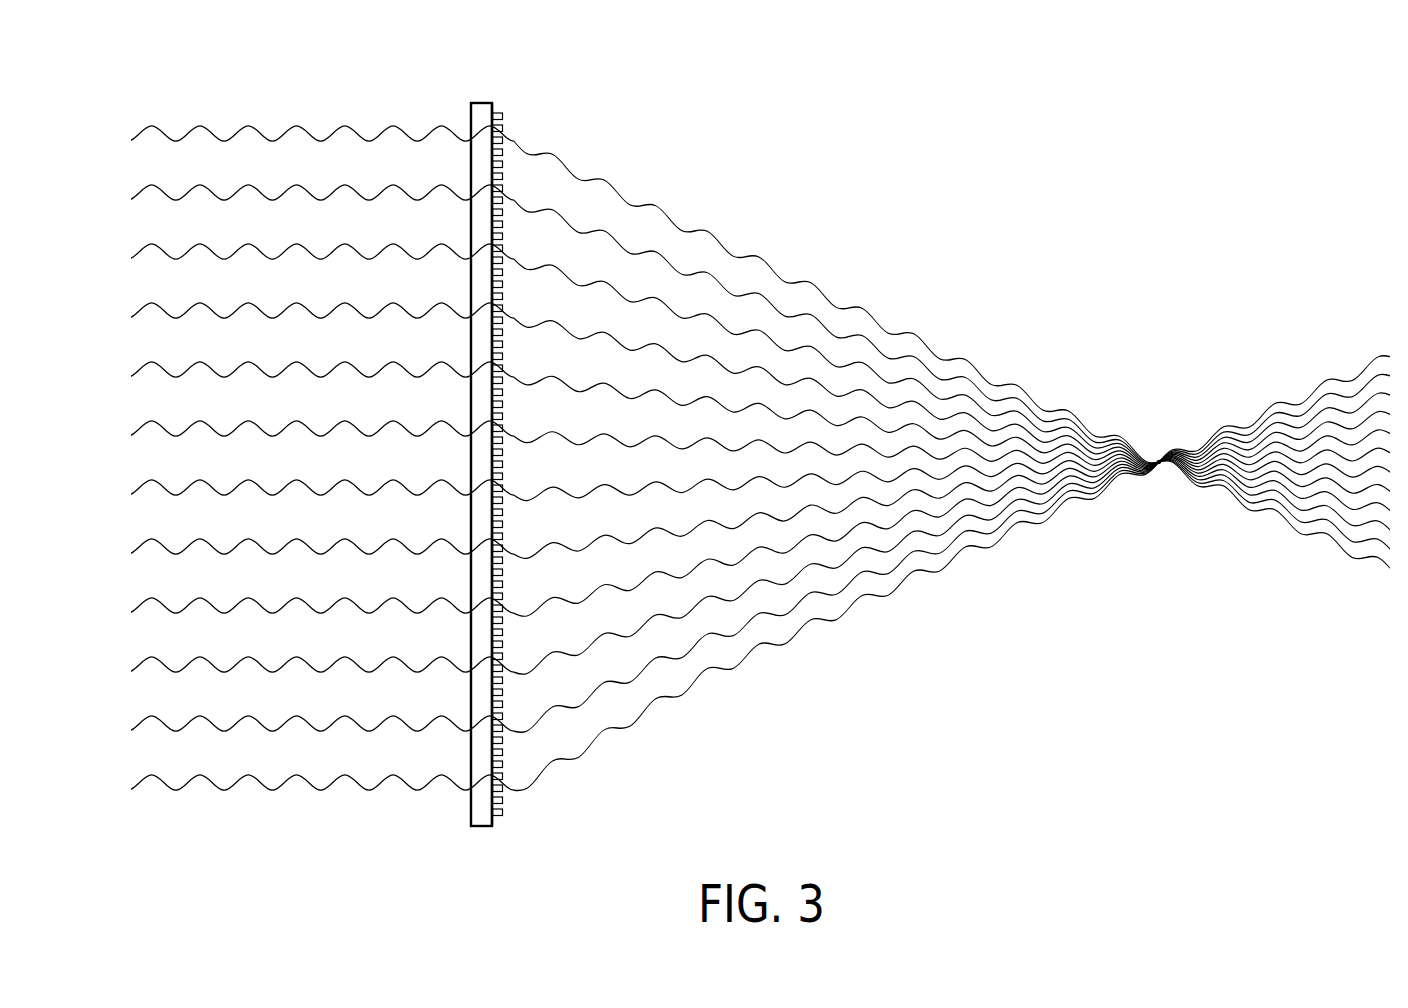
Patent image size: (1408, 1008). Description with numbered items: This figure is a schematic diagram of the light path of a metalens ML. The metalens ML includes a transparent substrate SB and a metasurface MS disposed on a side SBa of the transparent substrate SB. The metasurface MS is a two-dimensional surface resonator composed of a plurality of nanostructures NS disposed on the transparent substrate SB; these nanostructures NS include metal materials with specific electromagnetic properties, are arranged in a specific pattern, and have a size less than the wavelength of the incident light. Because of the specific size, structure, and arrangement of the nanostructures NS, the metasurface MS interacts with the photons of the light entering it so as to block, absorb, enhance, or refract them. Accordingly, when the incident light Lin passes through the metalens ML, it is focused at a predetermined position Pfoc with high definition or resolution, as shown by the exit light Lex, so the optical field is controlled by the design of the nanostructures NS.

The incident light Lin is at (216, 131).
The metalens ML is at (585, 55).
The transparent substrate SB is at (477, 117).
The side of the transparent substrate SBa is at (493, 828).
The nanostructures NS is at (535, 436).
The metasurface MS is at (535, 88).
The exit light Lex is at (867, 317).
The predetermined position Pfoc is at (1170, 443).